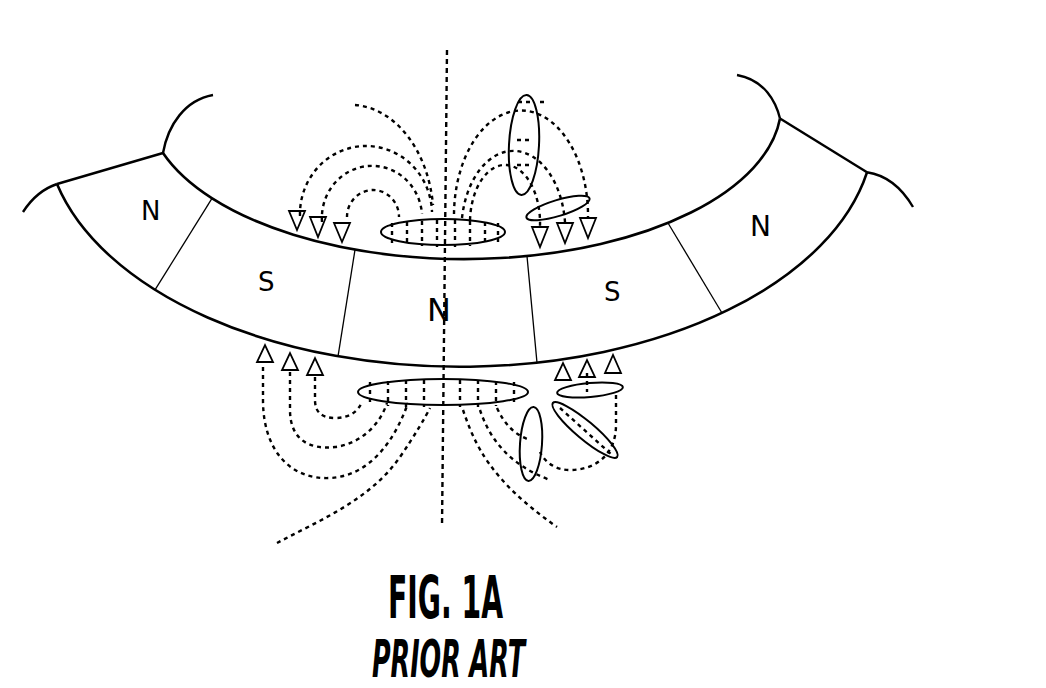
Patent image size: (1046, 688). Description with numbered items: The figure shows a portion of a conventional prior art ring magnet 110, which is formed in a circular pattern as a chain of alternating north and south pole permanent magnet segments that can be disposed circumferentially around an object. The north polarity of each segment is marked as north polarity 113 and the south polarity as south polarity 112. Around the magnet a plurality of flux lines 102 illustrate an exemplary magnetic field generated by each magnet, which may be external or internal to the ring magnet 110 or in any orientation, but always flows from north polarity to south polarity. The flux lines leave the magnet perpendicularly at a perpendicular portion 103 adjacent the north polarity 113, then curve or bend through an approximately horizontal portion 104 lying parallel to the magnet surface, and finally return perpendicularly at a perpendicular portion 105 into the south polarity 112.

The flux lines 102 is at (615, 457).
The perpendicular flux line portion at north polarity 103 is at (521, 243).
The horizontal flux line portion 104 is at (522, 95).
The perpendicular flux line portion at south polarity 105 is at (589, 199).
The ring magnet 110 is at (798, 74).
The south polarity 112 is at (670, 337).
The north polarity 113 is at (757, 297).